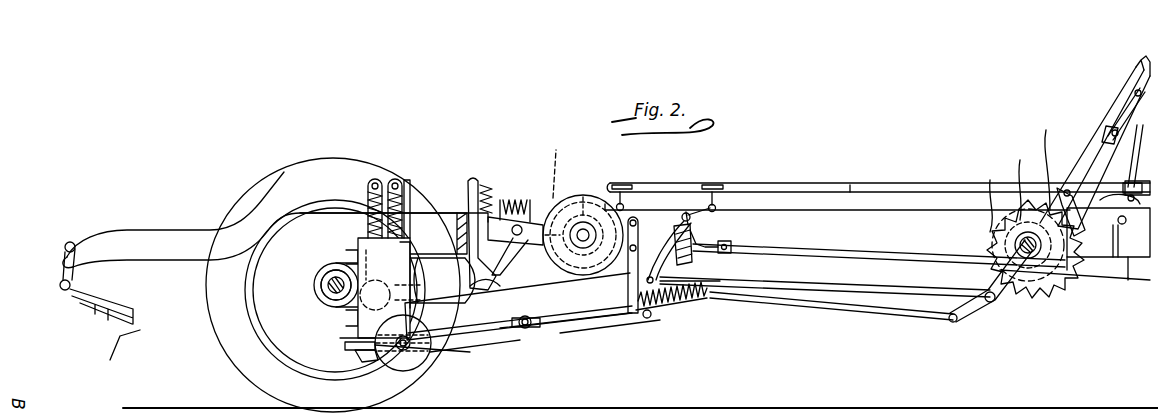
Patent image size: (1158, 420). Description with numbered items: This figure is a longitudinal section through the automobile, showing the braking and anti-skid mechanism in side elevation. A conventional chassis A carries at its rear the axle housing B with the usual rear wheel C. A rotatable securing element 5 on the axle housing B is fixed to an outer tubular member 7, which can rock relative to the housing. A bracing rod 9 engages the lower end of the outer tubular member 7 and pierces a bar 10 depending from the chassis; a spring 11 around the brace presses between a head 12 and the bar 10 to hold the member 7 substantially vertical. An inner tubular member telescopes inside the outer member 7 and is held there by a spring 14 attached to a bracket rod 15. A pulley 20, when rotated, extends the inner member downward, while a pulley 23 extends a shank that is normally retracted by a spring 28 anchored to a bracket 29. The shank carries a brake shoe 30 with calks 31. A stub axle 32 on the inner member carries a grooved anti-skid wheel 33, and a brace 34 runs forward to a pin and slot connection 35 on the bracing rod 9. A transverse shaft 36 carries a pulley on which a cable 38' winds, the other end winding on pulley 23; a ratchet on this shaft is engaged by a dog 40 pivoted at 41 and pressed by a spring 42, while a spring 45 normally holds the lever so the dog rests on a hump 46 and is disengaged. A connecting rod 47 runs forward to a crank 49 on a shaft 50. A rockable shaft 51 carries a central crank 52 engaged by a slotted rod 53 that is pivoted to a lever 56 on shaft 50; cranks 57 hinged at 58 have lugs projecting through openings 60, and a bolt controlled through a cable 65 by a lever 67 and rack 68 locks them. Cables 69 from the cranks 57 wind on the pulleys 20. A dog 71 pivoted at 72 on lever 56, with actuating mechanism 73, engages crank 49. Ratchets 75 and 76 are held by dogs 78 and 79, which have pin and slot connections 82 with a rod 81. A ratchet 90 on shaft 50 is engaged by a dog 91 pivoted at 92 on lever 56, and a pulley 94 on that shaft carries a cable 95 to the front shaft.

The rotatable securing element 5 is at (332, 265).
The outer tubular member 7 is at (389, 288).
The bracing rod 9 is at (576, 320).
The bar 10 is at (518, 306).
The spring 11 is at (678, 306).
The head 12 is at (683, 307).
The spring 14 is at (409, 186).
The bracket rod 15 is at (398, 183).
The pulley 20 is at (448, 300).
The pulley 23 is at (373, 260).
The spring 28 is at (368, 195).
The bracket 29 is at (376, 183).
The brake shoe 30 is at (345, 342).
The calks 31 is at (368, 363).
The stub axle 32 is at (428, 358).
The grooved anti-skid wheel 33 is at (404, 352).
The brace 34 is at (486, 338).
The pin and slot connection 35 is at (528, 330).
The shaft 36 is at (580, 196).
The cable 38' is at (520, 309).
The dog 40 is at (538, 212).
The pivot 41 is at (528, 248).
The spring 42 is at (508, 200).
The spring 45 is at (478, 200).
The hump 46 is at (493, 272).
The connecting rod 47 is at (900, 320).
The crank 49 is at (978, 285).
The shaft 50 is at (1021, 176).
The shaft 51 is at (690, 262).
The crank 52 is at (677, 244).
The rod 53 is at (648, 262).
The lever 56 is at (1100, 150).
The crank 57 is at (658, 318).
The hinge 58 is at (686, 212).
The opening 60 is at (730, 253).
The cable 65 is at (776, 244).
The lever 67 is at (1088, 158).
The rack 68 is at (1128, 262).
The cable 69 is at (612, 326).
The dog 71 is at (1108, 225).
The pivot 72 is at (1043, 159).
The actuating mechanism 73 is at (1140, 64).
The ratchet 75 is at (557, 164).
The ratchet 76 is at (704, 236).
The dog 78 is at (626, 204).
The dog 79 is at (722, 204).
The rod 81 is at (852, 188).
The pin and slot connection 82 is at (715, 190).
The ratchet 90 is at (1050, 280).
The dog 91 is at (1075, 257).
The pivot 92 is at (1058, 196).
The pulley 94 is at (986, 195).
The cable 95 is at (1116, 128).
The automobile chassis A is at (898, 198).
The axle housing B is at (314, 288).
The rear wheel C is at (225, 312).